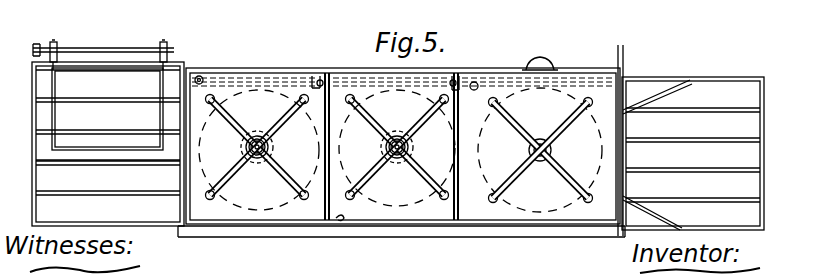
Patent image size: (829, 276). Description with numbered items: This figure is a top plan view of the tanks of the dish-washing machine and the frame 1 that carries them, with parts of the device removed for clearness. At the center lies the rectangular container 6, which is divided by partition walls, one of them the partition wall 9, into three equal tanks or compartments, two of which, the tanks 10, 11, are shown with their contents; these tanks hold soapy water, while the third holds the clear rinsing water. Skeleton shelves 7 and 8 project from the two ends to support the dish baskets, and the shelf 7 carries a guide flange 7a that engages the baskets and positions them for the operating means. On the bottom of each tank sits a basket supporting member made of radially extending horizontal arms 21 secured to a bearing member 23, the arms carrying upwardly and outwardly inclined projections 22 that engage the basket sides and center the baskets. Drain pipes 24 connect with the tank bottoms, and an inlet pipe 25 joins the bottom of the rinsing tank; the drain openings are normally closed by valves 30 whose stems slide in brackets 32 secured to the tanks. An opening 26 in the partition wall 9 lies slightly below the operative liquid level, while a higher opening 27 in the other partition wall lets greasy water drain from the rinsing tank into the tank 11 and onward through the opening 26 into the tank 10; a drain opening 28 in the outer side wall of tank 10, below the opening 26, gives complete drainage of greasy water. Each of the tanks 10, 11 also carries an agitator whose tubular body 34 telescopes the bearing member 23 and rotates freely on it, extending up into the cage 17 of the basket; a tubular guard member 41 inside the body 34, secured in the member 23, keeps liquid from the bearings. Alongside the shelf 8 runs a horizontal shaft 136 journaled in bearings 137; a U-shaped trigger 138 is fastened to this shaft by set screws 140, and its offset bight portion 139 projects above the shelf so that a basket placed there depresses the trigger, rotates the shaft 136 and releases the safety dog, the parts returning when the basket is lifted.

The frame 1 is at (632, 56).
The container 6 is at (340, 220).
The skeleton shelf 7 is at (694, 75).
The guide flange 7a is at (652, 96).
The skeleton shelf 8 is at (33, 82).
The partition wall 9 is at (478, 105).
The tank 10 is at (540, 222).
The tank 11 is at (455, 222).
The cage 17 is at (312, 215).
The radially extending horizontal arms 21 is at (232, 120).
The inclined projections 22 is at (232, 98).
The bearing member 23 is at (258, 160).
The drain pipes 24 is at (316, 76).
The inlet pipe 25 is at (200, 76).
The opening 26 is at (466, 148).
The opening 27 is at (322, 148).
The drain opening 28 is at (540, 72).
The valves 30 is at (328, 74).
The brackets 32 is at (342, 76).
The tubular body 34 is at (258, 136).
The tubular guard member 41 is at (242, 150).
The horizontal shaft 136 is at (90, 52).
The bearings 137 is at (40, 46).
The U-shaped trigger 138 is at (60, 92).
The offset bight portion 139 is at (107, 137).
The set screws 140 is at (55, 42).